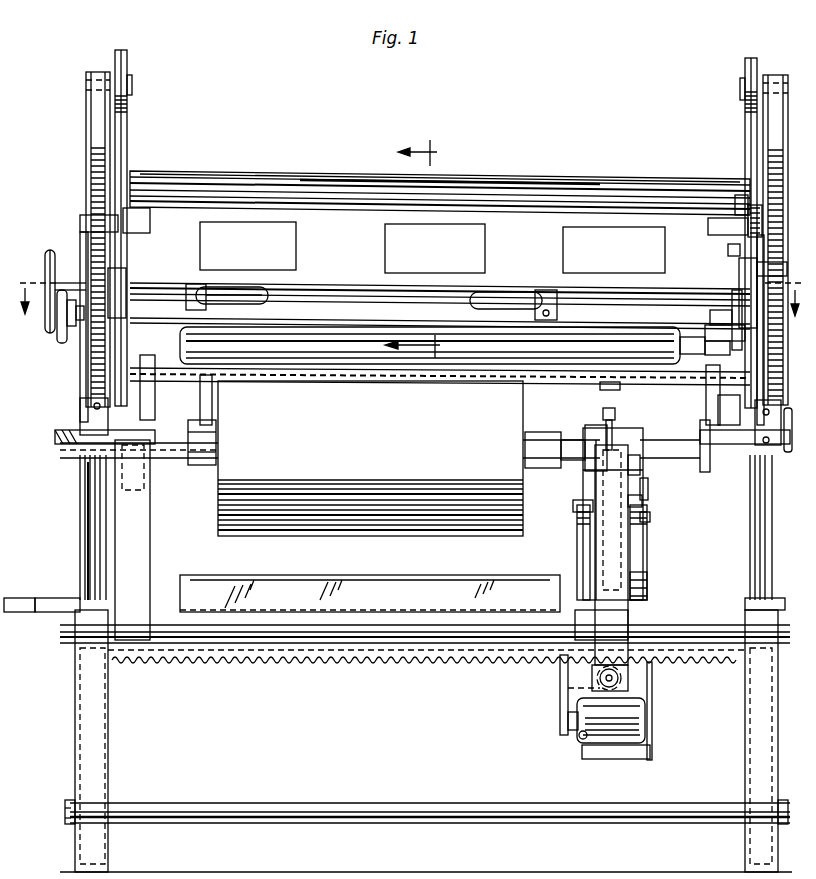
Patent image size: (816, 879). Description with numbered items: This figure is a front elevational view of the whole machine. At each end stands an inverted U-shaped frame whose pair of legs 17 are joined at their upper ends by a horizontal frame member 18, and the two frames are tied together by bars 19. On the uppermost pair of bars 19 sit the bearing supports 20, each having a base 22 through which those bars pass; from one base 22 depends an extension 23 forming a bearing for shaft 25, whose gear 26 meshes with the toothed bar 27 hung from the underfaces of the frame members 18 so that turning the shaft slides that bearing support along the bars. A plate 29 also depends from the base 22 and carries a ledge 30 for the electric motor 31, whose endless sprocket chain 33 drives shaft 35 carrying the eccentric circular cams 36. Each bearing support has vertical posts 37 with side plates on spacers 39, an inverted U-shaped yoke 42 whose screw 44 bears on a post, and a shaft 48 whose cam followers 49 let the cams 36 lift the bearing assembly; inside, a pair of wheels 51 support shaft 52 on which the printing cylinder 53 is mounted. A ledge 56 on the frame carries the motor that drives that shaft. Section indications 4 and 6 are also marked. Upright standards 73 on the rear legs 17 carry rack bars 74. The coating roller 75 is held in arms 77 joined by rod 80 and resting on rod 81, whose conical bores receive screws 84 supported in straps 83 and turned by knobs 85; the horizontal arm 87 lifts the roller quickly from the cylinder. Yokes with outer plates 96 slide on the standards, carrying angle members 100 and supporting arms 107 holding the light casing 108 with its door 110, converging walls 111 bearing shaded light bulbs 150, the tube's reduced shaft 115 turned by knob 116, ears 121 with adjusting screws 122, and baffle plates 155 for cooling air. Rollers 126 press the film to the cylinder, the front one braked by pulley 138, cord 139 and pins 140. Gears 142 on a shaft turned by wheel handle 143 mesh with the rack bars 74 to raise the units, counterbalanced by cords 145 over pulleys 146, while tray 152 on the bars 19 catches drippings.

The section line 4- 4 is at (405, 290).
The direction arrow 6 is at (418, 240).
The legs 17 is at (110, 760).
The horizontal frame member 18 is at (80, 602).
The bars 19 is at (260, 645).
The bearing supports 20 is at (146, 535).
The base 22 is at (142, 650).
The extension 23 is at (626, 690).
The shaft 25 is at (632, 676).
The gear 26 is at (568, 690).
The toothed bar 27 is at (190, 662).
The plate 29 is at (652, 745).
The ledge 30 is at (604, 760).
The electric motor 31 is at (580, 742).
The endless sprocket chain 33 is at (560, 682).
The shaft 35 is at (650, 586).
The eccentric circular cam 36 is at (580, 540).
The vertical posts 37 is at (640, 462).
The spacers 39 is at (643, 504).
The inverted U-shaped yoke 42 is at (646, 446).
The screw 44 is at (614, 409).
The shaft 48 is at (651, 518).
The cam follower 49 is at (574, 506).
The wheels 51 is at (86, 478).
The shaft 52 is at (174, 459).
The printing cylinder 53 is at (243, 537).
The ledge 56 is at (20, 613).
The upright standards 73 is at (84, 509).
The rack bars 74 is at (106, 172).
The roller 75 is at (680, 332).
The arms 77 is at (210, 395).
The rod 80 is at (606, 390).
The rod 81 is at (216, 418).
The strap 83 is at (86, 416).
The screw 84 is at (108, 433).
The knob 85 is at (782, 452).
The horizontal arm 87 is at (650, 490).
The outer plate 96 is at (84, 218).
The angle member 100 is at (150, 398).
The supporting arms 107 is at (126, 272).
The light casing 108 is at (550, 181).
The door 110 is at (328, 186).
The converging walls 111 is at (386, 293).
The reduced shaft 115 is at (734, 300).
The knob 116 is at (58, 340).
The ears 121 is at (150, 220).
The adjusting screws 122 is at (736, 204).
The rollers 126 is at (302, 345).
The pulley 138 is at (712, 334).
The cord 139 is at (722, 318).
The pins 140 is at (758, 270).
The gears 142 is at (728, 252).
The wheel handle 143 is at (50, 249).
The cords 145 is at (126, 132).
The pulleys 146 is at (128, 60).
The shaded light bulbs 150 is at (240, 292).
The tray 152 is at (335, 660).
The baffle plates 155 is at (238, 228).